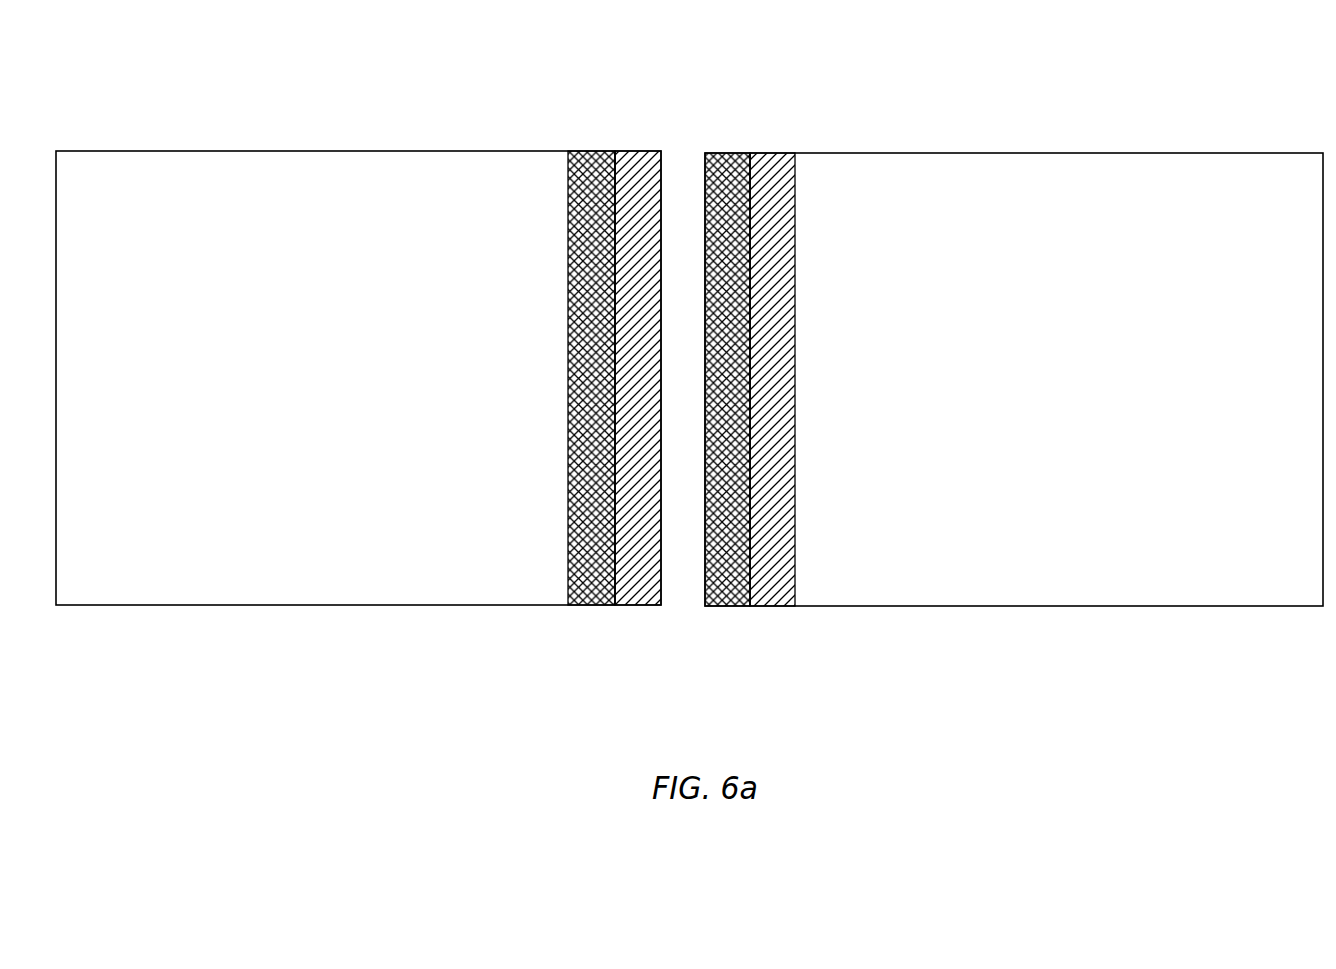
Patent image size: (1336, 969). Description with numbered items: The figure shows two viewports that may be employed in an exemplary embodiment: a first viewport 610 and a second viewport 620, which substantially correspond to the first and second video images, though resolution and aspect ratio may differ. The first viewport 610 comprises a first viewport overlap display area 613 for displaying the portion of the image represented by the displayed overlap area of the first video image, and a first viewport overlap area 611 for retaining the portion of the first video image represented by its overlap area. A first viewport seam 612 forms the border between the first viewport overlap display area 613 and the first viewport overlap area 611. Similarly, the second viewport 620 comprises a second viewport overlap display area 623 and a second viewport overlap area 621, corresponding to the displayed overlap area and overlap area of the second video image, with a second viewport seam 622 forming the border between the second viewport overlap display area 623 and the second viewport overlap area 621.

The first viewport 610 is at (358, 378).
The first viewport overlap area 611 is at (638, 606).
The first viewport seam 612 is at (615, 152).
The first viewport overlap display area 613 is at (583, 345).
The second viewport 620 is at (1014, 379).
The second viewport overlap area 621 is at (725, 607).
The second viewport seam 622 is at (748, 152).
The second viewport overlap display area 623 is at (785, 425).